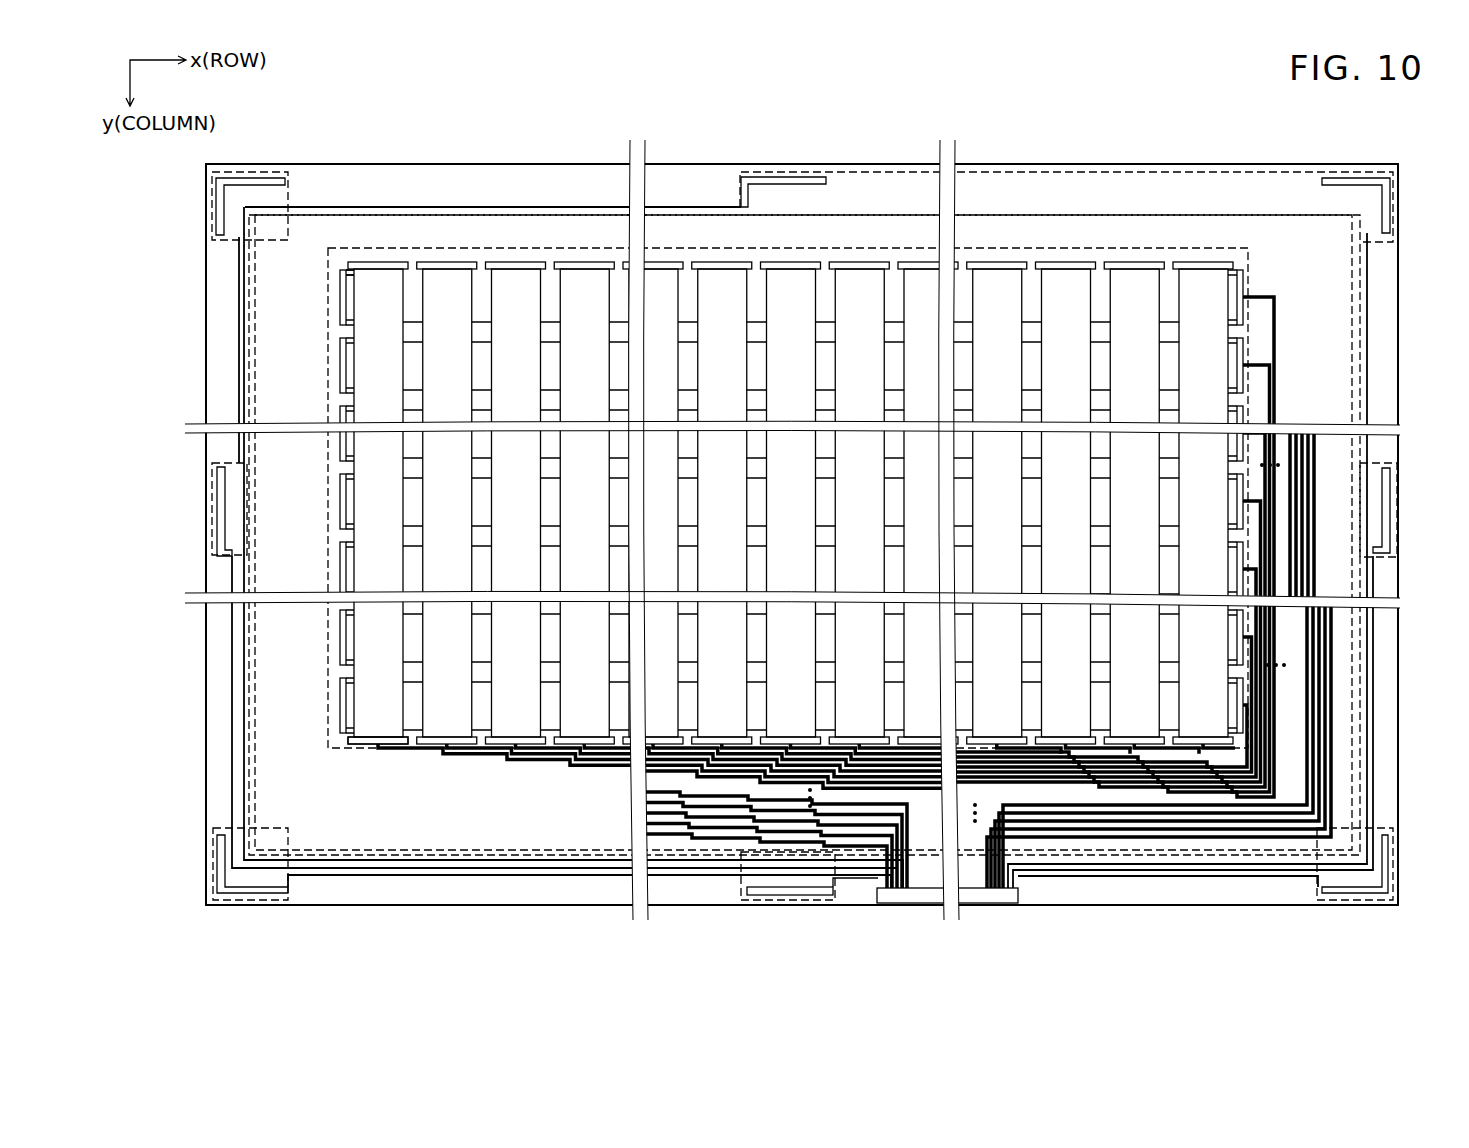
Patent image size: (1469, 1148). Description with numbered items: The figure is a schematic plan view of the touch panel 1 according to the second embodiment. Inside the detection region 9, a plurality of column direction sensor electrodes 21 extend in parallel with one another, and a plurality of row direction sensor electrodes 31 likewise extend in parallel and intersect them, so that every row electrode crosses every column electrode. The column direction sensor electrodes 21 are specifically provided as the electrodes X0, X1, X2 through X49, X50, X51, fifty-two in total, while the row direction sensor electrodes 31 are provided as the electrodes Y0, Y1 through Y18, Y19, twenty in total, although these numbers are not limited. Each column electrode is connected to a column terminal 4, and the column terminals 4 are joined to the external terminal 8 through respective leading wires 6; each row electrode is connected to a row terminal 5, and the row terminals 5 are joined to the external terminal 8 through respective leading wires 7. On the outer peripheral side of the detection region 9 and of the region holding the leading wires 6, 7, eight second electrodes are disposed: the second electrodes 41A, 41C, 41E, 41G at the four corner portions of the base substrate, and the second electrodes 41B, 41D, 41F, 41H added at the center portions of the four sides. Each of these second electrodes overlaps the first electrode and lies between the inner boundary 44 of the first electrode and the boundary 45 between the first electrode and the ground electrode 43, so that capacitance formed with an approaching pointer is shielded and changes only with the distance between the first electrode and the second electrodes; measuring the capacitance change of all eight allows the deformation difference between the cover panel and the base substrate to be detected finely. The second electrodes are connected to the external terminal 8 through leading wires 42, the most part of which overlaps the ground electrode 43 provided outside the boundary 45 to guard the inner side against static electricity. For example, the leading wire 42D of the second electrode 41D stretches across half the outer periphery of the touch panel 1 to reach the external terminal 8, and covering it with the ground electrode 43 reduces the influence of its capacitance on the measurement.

The touch panel 1 is at (205, 186).
The column terminal 4 is at (362, 750).
The row terminal 5 is at (1245, 280).
The leading wire 6 is at (415, 755).
The leading wire 7 is at (1335, 695).
The external terminal 8 is at (985, 905).
The detection region 9 is at (320, 730).
The column direction sensor electrode 21 is at (340, 275).
The row direction sensor electrode 31 is at (480, 282).
The second electrode 41A is at (245, 900).
The second electrode 41B is at (213, 512).
The second electrode 41C is at (262, 177).
The second electrode 41D is at (790, 180).
The second electrode 41E is at (1385, 215).
The second electrode 41F is at (1393, 512).
The second electrode 41G is at (1390, 845).
The second electrode 41H is at (790, 897).
The leading wire 42 is at (355, 877).
The leading wire 42D is at (712, 205).
The ground electrode 43 is at (213, 808).
The inner boundary of the first electrode 44 is at (235, 628).
The boundary between the first electrode and the ground electrode 45 is at (235, 698).
The electrode X0 is at (378, 280).
The electrode X1 is at (445, 280).
The electrode X2 is at (515, 285).
The electrode X49 is at (1065, 280).
The electrode X50 is at (1135, 285).
The electrode X51 is at (1205, 282).
The electrode Y0 is at (340, 300).
The electrode Y1 is at (340, 375).
The electrode Y18 is at (340, 640).
The electrode Y19 is at (340, 705).